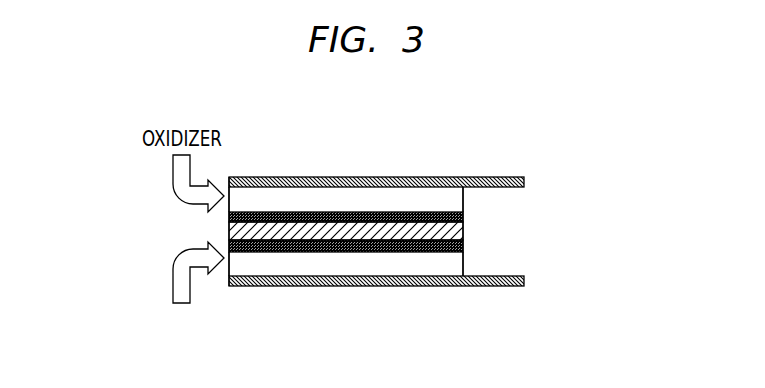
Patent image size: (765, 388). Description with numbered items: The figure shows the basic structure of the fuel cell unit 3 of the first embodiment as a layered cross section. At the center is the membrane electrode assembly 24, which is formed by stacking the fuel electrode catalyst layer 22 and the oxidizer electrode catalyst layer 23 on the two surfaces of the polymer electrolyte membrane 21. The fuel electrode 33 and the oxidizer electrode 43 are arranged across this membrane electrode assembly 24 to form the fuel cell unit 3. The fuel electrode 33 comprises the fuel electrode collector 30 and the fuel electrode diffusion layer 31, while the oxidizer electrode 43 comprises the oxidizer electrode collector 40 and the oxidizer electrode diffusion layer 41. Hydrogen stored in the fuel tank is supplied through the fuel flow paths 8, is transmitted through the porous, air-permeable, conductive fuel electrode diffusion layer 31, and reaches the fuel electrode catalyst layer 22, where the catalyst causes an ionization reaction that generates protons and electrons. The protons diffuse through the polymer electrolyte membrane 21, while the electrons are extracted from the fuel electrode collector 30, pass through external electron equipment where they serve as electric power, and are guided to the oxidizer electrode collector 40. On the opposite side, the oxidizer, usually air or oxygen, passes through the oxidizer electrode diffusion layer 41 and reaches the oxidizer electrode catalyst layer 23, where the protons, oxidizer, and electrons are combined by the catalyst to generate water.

The fuel cell unit 3 is at (313, 150).
The fuel flow paths 8 is at (178, 266).
The polymer electrolyte membrane 21 is at (463, 232).
The fuel electrode catalyst layer 22 is at (463, 248).
The oxidizer electrode catalyst layer 23 is at (463, 213).
The membrane electrode assembly 24 is at (588, 193).
The fuel electrode collector 30 is at (393, 286).
The fuel electrode diffusion layer 31 is at (430, 265).
The fuel electrode 33 is at (480, 348).
The oxidizer electrode collector 40 is at (395, 178).
The oxidizer electrode diffusion layer 41 is at (432, 198).
The oxidizer electrode 43 is at (483, 118).